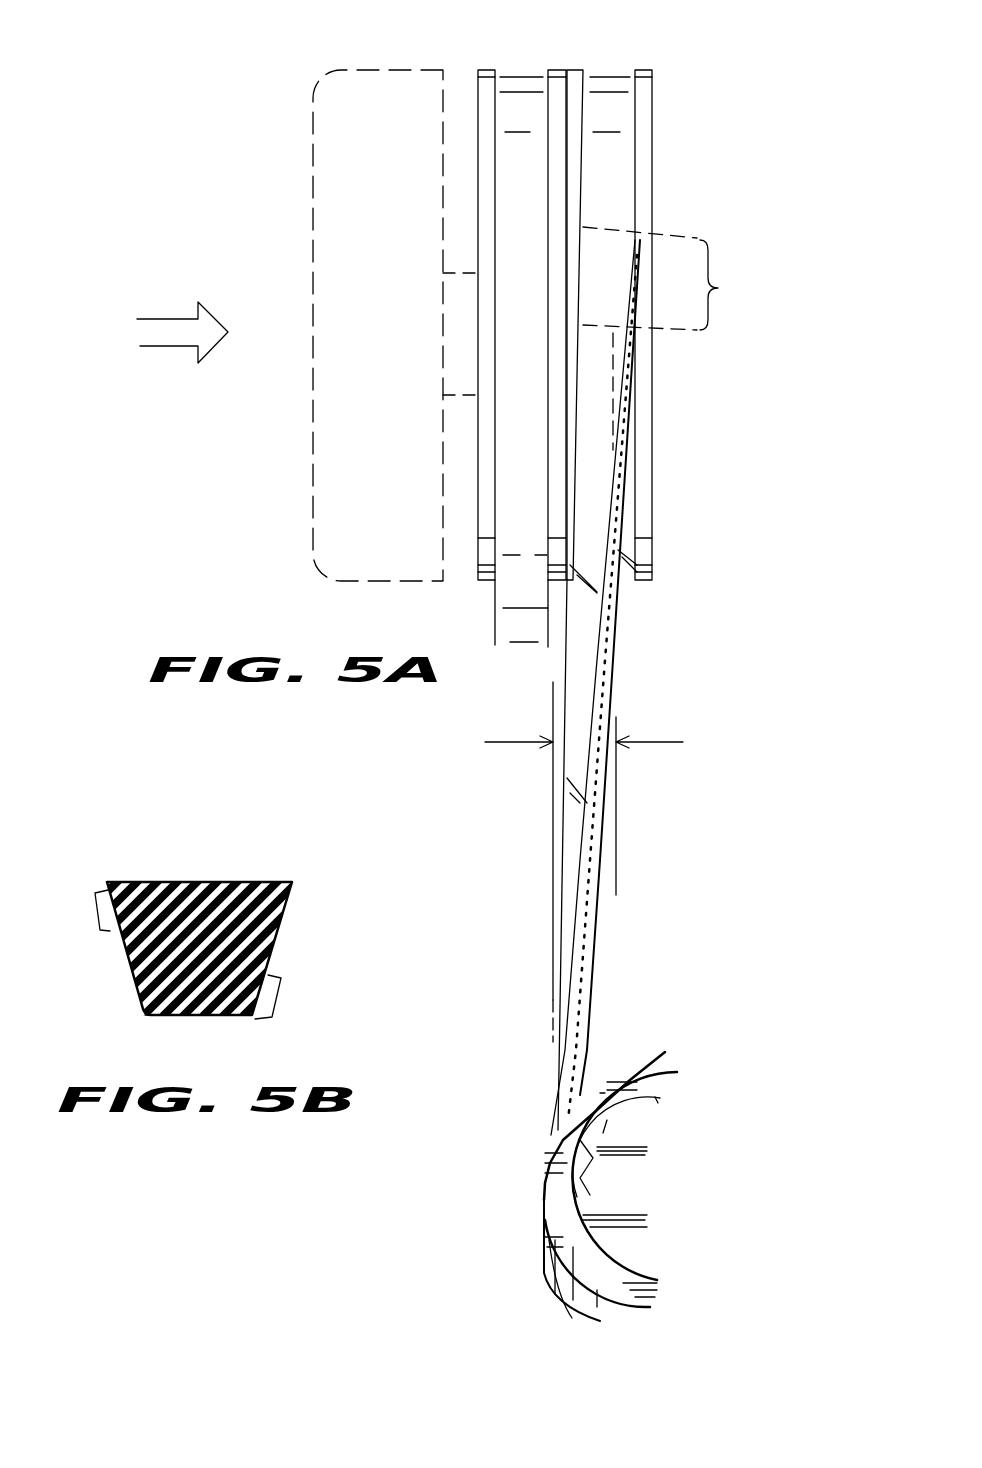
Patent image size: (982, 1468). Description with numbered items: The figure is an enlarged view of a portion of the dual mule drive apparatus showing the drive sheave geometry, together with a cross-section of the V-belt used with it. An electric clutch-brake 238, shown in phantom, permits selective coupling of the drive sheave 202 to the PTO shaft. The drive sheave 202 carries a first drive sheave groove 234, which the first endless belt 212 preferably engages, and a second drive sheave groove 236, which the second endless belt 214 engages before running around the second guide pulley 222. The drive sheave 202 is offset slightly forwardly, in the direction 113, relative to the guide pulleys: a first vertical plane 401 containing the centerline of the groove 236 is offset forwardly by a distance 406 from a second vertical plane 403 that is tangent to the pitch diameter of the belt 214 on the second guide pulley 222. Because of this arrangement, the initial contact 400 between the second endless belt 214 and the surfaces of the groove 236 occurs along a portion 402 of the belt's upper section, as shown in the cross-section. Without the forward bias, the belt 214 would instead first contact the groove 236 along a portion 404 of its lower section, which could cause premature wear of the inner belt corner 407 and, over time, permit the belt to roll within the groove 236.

In FIG. 5A, the direction 113 is at (163, 319).
In FIG. 5A, the drive sheave 202 is at (653, 77).
In FIG. 5A, the first endless belt 212 is at (495, 608).
In FIG. 5A, the second endless belt 214 is at (600, 663).
In FIG. 5B, the second endless belt 214 is at (250, 880).
In FIG. 5A, the second guide pulley 222 is at (645, 1052).
In FIG. 5A, the first drive sheave groove 234 is at (497, 72).
In FIG. 5A, the second drive sheave groove 236 is at (583, 74).
In FIG. 5A, the electric clutch-brake 238 is at (338, 68).
In FIG. 5A, the initial contact 400 is at (718, 288).
In FIG. 5A, the first vertical plane 401 is at (616, 812).
In FIG. 5B, the portion of the belt's upper section 402 is at (92, 912).
In FIG. 5A, the second vertical plane 403 is at (553, 705).
In FIG. 5B, the portion of the belt's lower section 404 is at (282, 998).
In FIG. 5A, the distance 406 is at (683, 742).
In FIG. 5B, the inner belt corner 407 is at (252, 1016).